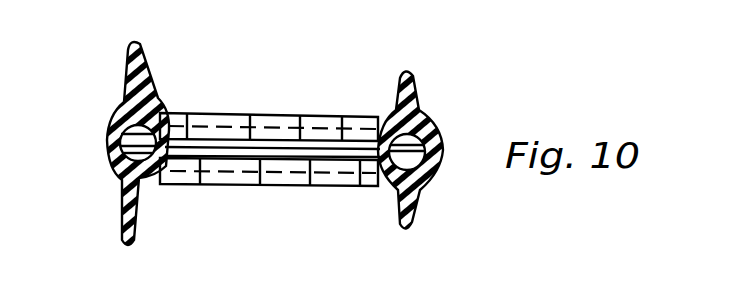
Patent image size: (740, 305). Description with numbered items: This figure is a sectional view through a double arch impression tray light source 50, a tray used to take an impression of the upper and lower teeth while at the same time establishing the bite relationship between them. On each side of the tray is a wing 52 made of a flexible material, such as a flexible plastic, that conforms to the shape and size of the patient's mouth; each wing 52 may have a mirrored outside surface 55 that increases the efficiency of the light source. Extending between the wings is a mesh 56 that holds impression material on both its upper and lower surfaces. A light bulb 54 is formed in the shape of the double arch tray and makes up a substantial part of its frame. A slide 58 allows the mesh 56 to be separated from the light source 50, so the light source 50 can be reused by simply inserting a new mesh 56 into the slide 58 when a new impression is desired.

The double arch impression tray light source 50 is at (279, 200).
The wing 52 is at (150, 74).
The light bulb 54 is at (109, 160).
The mirrored outside surface 55 is at (130, 84).
The mesh 56 is at (258, 113).
The slide 58 is at (384, 128).